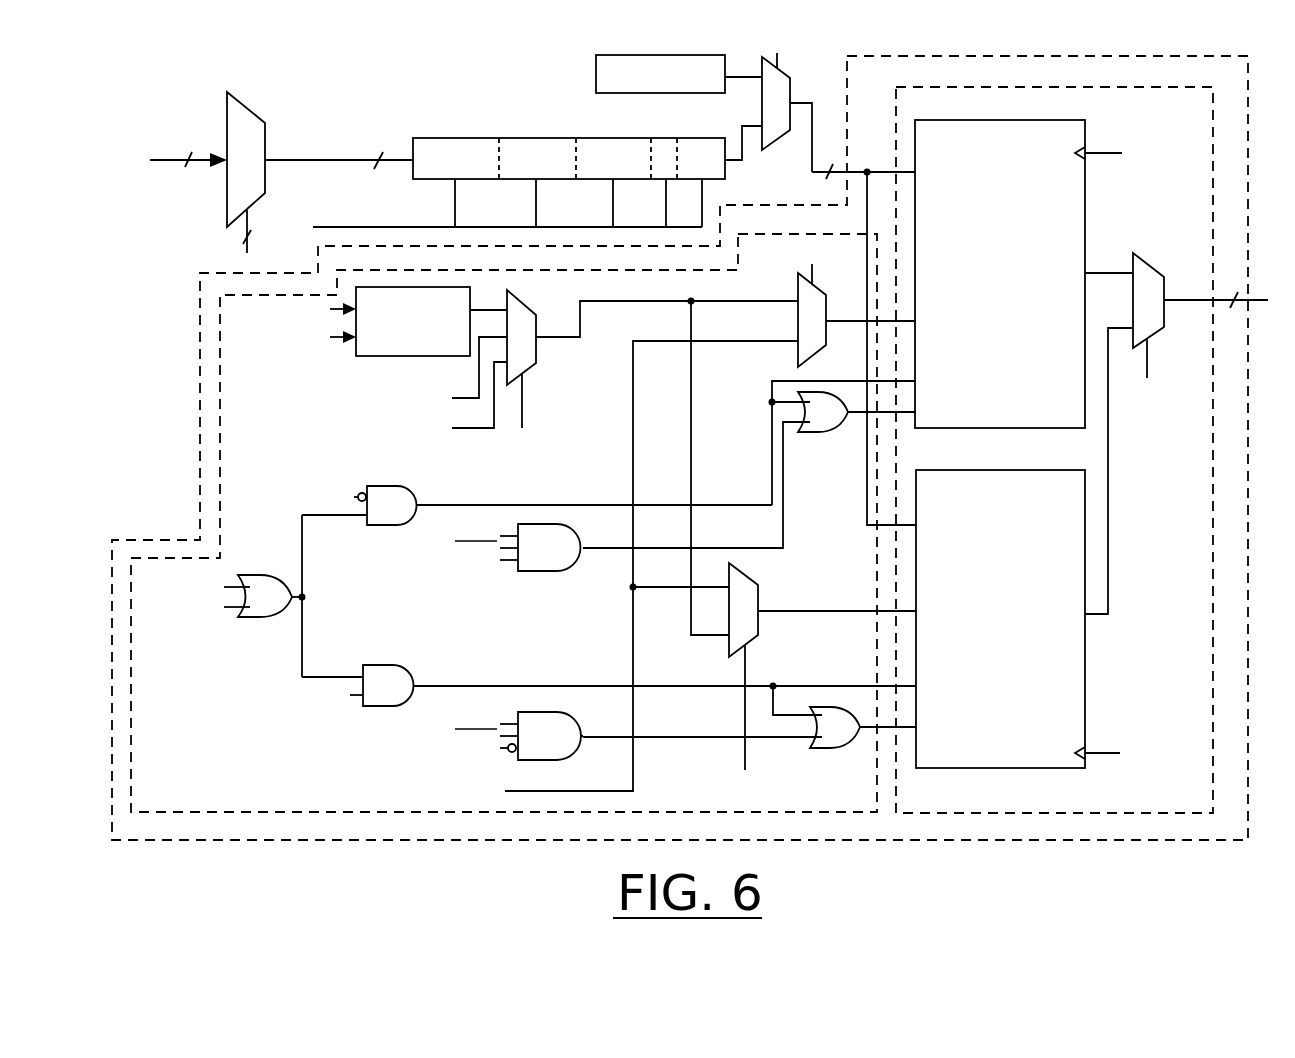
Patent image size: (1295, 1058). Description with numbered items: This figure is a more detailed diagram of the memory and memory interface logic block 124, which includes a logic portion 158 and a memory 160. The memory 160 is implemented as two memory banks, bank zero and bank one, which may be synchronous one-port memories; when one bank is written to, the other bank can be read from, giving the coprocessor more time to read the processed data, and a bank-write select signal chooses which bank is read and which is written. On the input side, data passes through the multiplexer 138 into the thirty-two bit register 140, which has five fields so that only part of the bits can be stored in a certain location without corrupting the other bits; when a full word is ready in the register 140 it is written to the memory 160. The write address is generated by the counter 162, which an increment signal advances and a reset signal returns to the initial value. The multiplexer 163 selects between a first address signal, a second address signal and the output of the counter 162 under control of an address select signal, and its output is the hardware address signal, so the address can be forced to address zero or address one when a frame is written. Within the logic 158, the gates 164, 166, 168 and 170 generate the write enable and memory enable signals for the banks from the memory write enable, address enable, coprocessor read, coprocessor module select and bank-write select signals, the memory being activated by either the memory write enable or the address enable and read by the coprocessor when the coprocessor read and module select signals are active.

The memory and memory interface logic block 124 is at (1228, 46).
The multiplexer (MUX2) 138 is at (242, 108).
The 32-bit register 140 is at (460, 138).
The logic portion 158 is at (768, 234).
The memory 160 is at (1160, 87).
The counter 162 is at (385, 357).
The multiplexer 163 is at (521, 300).
The gate 164 is at (390, 486).
The gate 166 is at (250, 575).
The gate 168 is at (818, 433).
The gate 170 is at (547, 572).